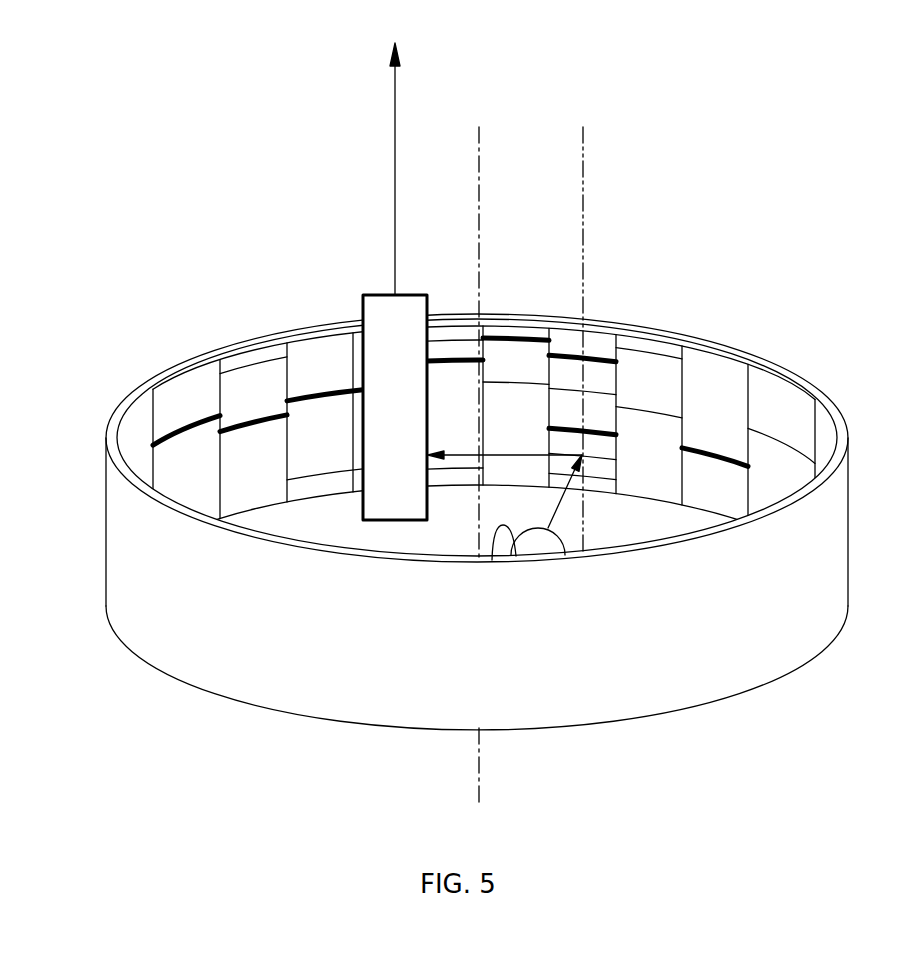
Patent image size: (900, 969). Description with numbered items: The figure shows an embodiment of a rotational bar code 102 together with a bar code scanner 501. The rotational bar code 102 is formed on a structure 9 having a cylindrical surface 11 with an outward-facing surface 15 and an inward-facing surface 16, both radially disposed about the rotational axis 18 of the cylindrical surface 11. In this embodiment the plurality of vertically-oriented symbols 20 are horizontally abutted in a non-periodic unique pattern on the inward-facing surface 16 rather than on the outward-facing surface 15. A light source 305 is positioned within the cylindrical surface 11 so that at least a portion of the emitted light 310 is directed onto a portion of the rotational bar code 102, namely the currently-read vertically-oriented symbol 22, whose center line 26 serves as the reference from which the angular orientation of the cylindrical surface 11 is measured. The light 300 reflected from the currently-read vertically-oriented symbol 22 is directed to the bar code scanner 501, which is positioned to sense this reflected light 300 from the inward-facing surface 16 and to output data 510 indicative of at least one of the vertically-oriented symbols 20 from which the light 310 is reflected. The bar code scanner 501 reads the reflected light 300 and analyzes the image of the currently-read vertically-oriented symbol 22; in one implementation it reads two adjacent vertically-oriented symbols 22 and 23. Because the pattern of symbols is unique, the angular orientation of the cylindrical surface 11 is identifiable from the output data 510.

The structure 9 is at (837, 416).
The cylindrical surface 11 is at (225, 673).
The outward-facing surface 15 is at (478, 708).
The inward-facing surface 16 is at (781, 389).
The rotational axis 18 is at (480, 190).
The vertically-oriented symbols 20 is at (183, 345).
The currently-read vertically-oriented symbol 22 is at (600, 333).
The adjacent vertically-oriented symbol 23 is at (653, 352).
The center line of the currently-read vertically-oriented symbol 26 is at (584, 178).
The rotational bar code 102 is at (338, 767).
The reflected light 300 is at (512, 453).
The light source 305 is at (492, 560).
The emitted light 310 is at (555, 507).
The bar code scanner 501 is at (416, 427).
The output data 510 is at (395, 141).